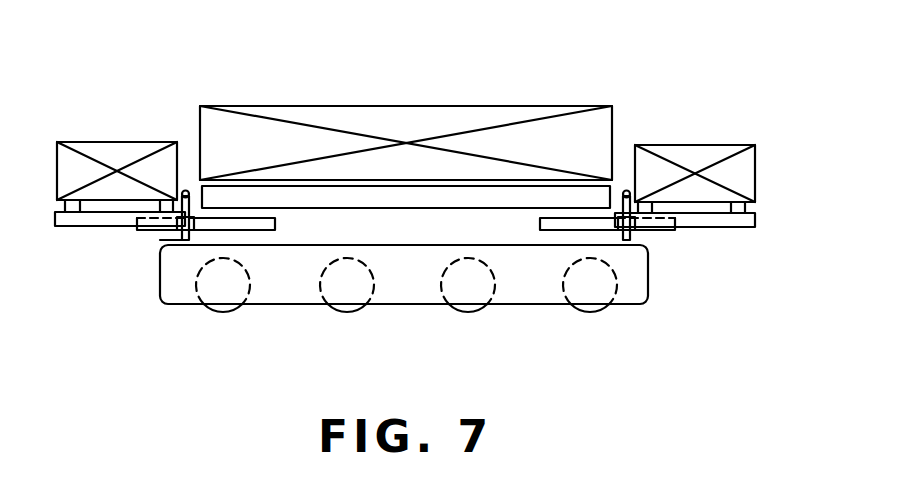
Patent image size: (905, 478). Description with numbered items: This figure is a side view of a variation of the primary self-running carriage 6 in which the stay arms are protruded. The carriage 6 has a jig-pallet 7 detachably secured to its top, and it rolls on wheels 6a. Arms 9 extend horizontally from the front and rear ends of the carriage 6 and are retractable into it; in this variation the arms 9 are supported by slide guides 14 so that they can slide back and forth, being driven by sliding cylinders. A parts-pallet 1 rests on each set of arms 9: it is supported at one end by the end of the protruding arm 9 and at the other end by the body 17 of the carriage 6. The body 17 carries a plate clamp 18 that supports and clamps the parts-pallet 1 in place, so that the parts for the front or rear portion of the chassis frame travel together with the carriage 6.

The parts-pallet 1 is at (133, 142).
The primary self-running carriage 6 is at (410, 290).
The wheels 6a is at (342, 313).
The jig-pallet 7 is at (520, 106).
The arm 9 is at (87, 226).
The slide guide 14 is at (137, 230).
The body 17 is at (160, 242).
The plate clamp 18 is at (187, 191).